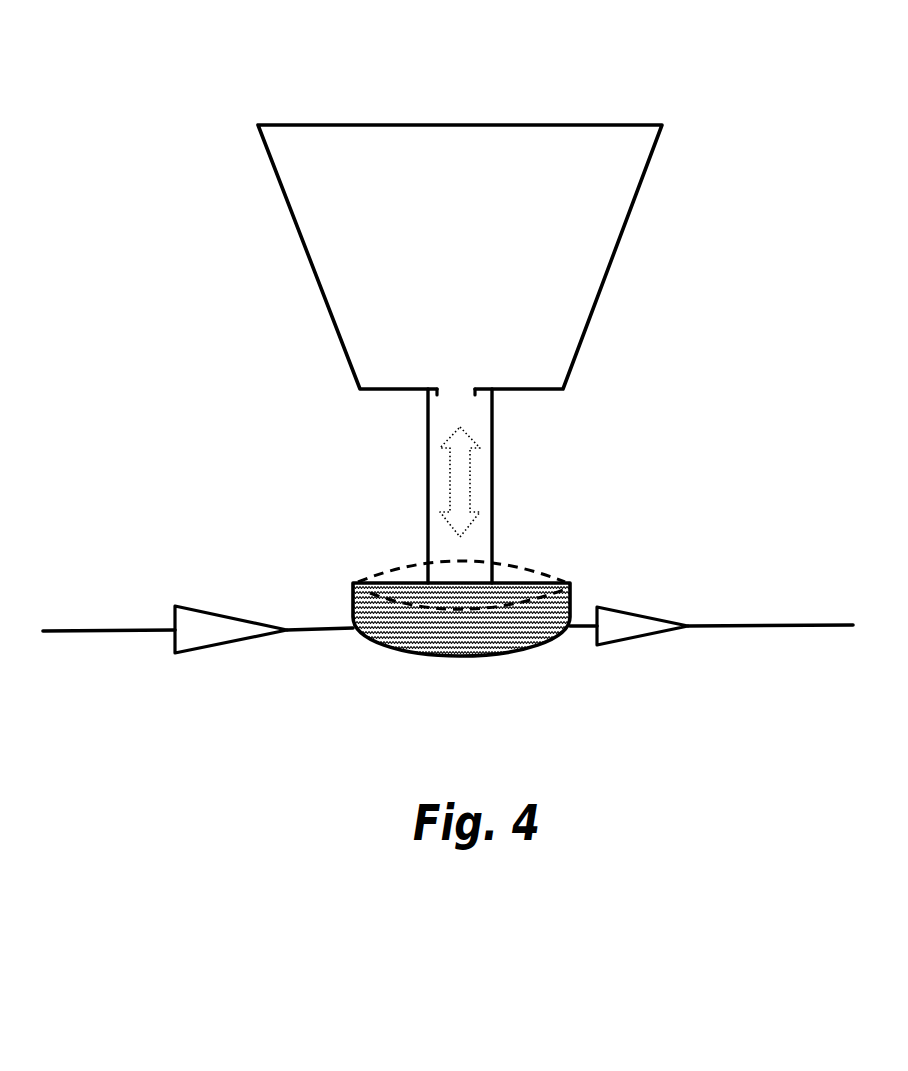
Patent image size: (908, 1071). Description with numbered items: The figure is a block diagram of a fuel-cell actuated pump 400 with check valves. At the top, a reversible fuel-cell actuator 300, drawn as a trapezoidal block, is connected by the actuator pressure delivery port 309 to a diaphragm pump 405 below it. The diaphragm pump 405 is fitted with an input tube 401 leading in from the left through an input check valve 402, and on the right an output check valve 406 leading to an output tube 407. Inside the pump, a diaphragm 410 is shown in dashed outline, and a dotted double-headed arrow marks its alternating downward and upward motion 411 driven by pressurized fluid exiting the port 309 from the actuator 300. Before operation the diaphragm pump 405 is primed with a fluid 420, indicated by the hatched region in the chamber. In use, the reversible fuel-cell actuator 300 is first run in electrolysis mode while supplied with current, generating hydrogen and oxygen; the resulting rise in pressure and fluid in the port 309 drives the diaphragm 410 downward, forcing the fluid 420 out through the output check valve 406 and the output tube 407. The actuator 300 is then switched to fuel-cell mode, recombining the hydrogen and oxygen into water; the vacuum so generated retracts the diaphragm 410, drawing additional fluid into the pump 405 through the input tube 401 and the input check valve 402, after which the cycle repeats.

The reversible fuel-cell actuator 300 is at (517, 118).
The actuator pressure delivery port 309 is at (420, 420).
The fuel-cell actuated pump 400 is at (450, 481).
The input tube 401 is at (102, 632).
The input check valve 402 is at (182, 602).
The diaphragm pump 405 is at (562, 582).
The output check valve 406 is at (652, 613).
The output tube 407 is at (800, 627).
The diaphragm 410 is at (408, 580).
The downward and upward motion 411 is at (473, 467).
The fluid 420 is at (407, 610).